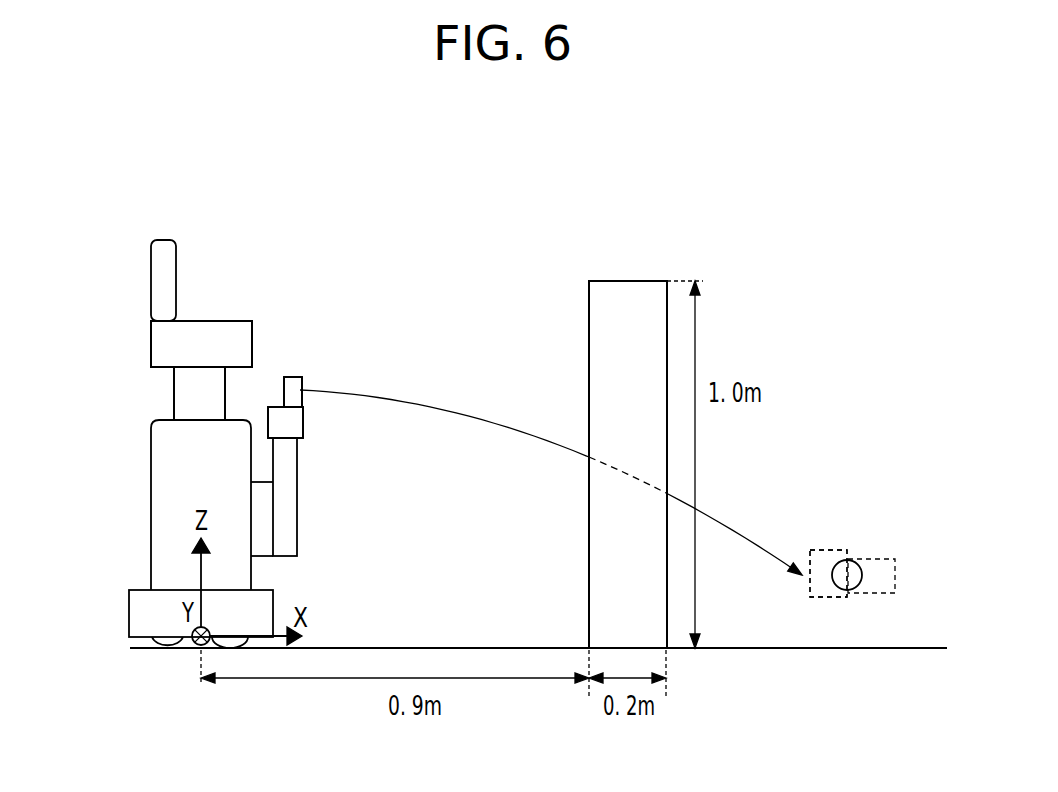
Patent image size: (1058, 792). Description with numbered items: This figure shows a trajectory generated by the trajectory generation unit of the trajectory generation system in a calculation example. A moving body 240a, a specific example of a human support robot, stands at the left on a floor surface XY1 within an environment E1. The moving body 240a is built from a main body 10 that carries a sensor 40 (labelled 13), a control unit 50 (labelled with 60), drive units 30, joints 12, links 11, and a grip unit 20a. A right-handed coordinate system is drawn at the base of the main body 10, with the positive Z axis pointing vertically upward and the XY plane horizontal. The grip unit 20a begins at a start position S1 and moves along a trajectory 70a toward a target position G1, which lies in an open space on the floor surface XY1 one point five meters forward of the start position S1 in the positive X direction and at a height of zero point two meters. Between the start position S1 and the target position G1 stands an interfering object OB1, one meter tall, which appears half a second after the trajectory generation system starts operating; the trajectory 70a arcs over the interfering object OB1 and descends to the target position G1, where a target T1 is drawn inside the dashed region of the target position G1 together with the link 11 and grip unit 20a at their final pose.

The moving body 240a is at (277, 241).
The main body 10 is at (151, 495).
The sensor 40 is at (252, 340).
The arm 13 is at (201, 344).
The control unit 50 is at (151, 347).
The storage unit 60 is at (201, 344).
The drive unit 30 is at (180, 398).
The joint 12 is at (147, 403).
The grip unit 20a is at (296, 382).
The start position S1 is at (303, 390).
The link 11 is at (303, 428).
The trajectory 70a is at (435, 407).
The interfering object OB1 is at (630, 281).
The target position G1 is at (815, 550).
The target T1 is at (852, 568).
The floor surface XY1 is at (890, 648).
The environment E1 is at (923, 183).